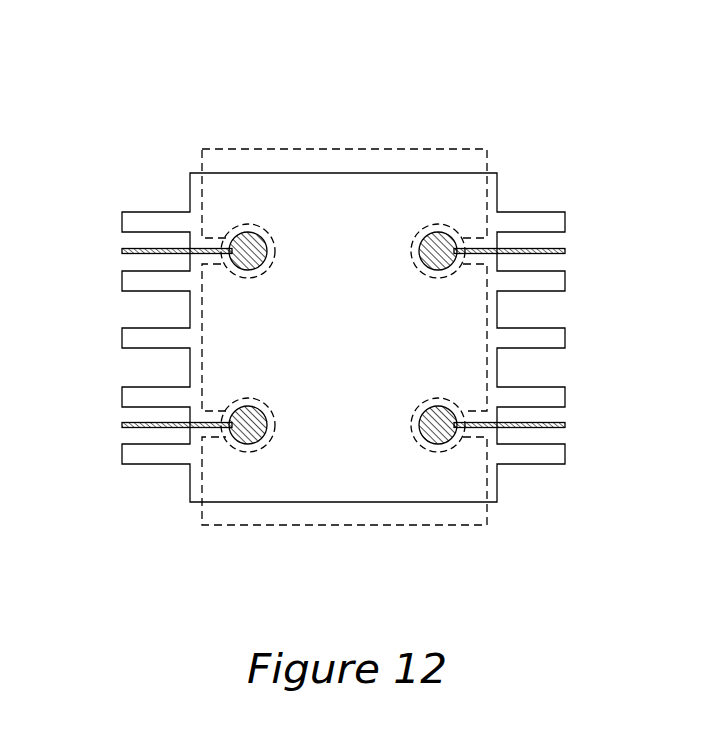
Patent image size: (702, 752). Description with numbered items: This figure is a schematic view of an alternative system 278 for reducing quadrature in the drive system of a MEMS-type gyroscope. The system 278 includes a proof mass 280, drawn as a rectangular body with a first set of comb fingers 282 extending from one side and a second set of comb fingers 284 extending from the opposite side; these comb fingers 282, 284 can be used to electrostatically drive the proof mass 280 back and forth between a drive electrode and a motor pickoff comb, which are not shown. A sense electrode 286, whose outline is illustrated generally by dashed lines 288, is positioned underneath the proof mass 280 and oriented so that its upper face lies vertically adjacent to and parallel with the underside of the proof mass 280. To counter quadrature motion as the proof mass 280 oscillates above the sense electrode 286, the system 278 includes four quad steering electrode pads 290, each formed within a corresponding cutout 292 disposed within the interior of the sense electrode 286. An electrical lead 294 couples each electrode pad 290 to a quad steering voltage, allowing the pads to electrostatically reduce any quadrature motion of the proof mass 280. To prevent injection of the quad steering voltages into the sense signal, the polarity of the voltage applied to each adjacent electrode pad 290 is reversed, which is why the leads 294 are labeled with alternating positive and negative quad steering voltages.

The system 278 is at (359, 106).
The proof mass 280 is at (491, 185).
The first set of comb fingers 282 is at (125, 280).
The second set of comb fingers 284 is at (557, 282).
The sense electrode 286 is at (350, 193).
The dashed lines 288 is at (285, 149).
The quad steering electrode pads 290 is at (254, 264).
The cutouts 292 is at (263, 211).
The electrical lead 294 is at (179, 248).